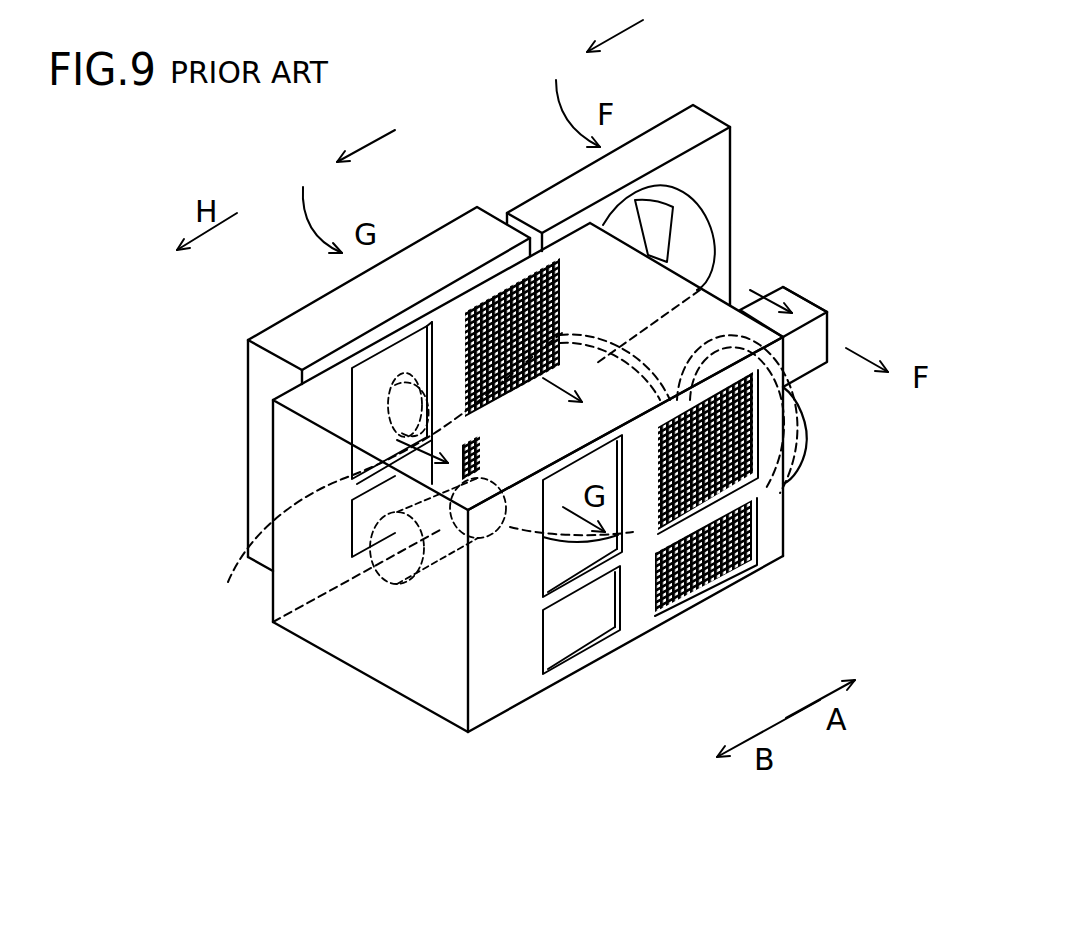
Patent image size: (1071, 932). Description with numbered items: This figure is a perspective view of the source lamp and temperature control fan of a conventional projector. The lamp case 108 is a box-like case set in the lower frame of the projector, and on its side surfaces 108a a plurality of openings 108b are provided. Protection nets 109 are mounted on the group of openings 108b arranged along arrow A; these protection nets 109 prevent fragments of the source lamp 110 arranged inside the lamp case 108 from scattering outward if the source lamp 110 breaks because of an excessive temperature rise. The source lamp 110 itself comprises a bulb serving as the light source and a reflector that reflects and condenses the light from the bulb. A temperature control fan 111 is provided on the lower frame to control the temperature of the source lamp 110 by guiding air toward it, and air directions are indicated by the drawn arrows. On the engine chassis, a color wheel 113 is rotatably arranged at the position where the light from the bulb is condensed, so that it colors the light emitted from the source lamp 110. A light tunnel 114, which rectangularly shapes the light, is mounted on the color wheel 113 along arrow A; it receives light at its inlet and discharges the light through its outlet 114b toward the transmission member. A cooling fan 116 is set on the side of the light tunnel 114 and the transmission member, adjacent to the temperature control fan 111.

The lamp case 108 is at (415, 673).
The side surfaces 108a is at (503, 670).
The openings 108b is at (760, 532).
The protection nets 109 is at (463, 317).
The source lamp 110 is at (700, 290).
The temperature control fan 111 is at (430, 258).
The color wheel 113 is at (788, 450).
The light tunnel 114 is at (805, 357).
The outlet 114b is at (813, 298).
The cooling fan 116 is at (713, 178).